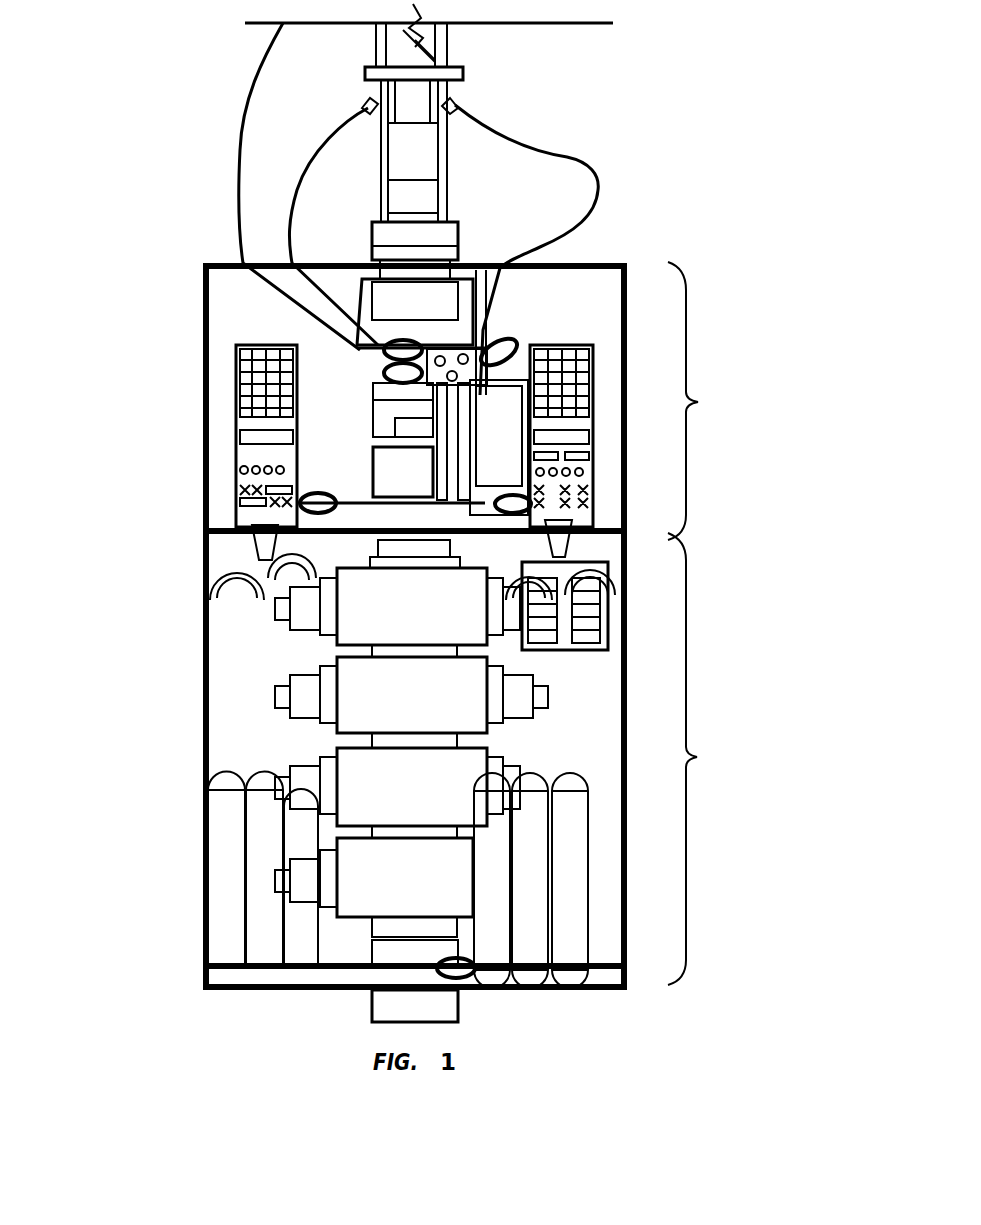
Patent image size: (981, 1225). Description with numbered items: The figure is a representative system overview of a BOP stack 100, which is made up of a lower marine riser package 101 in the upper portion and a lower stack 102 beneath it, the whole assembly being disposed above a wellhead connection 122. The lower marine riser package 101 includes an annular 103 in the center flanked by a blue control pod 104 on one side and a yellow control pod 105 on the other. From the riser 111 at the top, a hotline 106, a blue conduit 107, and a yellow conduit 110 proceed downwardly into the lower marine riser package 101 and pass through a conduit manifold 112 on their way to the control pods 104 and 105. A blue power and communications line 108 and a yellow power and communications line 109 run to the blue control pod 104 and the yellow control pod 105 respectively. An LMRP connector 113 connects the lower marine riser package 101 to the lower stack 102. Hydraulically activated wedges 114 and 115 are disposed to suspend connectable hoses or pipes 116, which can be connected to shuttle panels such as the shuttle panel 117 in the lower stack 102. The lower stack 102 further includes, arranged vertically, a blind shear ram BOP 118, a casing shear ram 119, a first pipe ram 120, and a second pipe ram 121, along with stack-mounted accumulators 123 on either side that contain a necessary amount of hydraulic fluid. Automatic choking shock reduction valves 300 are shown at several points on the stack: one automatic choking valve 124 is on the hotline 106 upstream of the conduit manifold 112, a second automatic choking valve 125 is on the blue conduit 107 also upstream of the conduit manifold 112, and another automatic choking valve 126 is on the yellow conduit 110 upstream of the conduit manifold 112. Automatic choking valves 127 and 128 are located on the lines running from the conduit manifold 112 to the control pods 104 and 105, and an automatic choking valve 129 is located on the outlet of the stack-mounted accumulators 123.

The BOP stack 100 is at (715, 144).
The lower marine riser package 101 is at (720, 401).
The lower stack 102 is at (716, 759).
The annular 103 is at (431, 317).
The blue control pod 104 is at (253, 342).
The yellow control pod 105 is at (590, 320).
The hotline 106 is at (234, 203).
The blue conduit 107 is at (330, 143).
The blue power and communications line 108 is at (382, 207).
The yellow power and communications line 109 is at (448, 187).
The yellow conduit 110 is at (568, 152).
The riser 111 is at (447, 52).
The conduit manifold 112 is at (488, 395).
The LMRP connector 113 is at (385, 473).
The hydraulically activated wedge 114 is at (268, 548).
The hydraulically activated wedge 115 is at (545, 535).
The connectable hoses or pipes 116 is at (588, 562).
The shuttle panel 117 is at (565, 648).
The blind shear ram BOP 118 is at (431, 619).
The casing shear ram 119 is at (431, 704).
The first pipe ram 120 is at (431, 791).
The second pipe ram 121 is at (431, 894).
The wellhead connection 122 is at (370, 1007).
The stack-mounted accumulators 123 is at (565, 978).
The automatic choking valve 124 is at (387, 342).
The automatic choking valve 125 is at (379, 387).
The automatic choking valve 126 is at (501, 341).
The automatic choking valve 127 is at (337, 496).
The automatic choking valve 128 is at (505, 492).
The automatic choking valve 129 is at (437, 977).
The automatic choking shock reduction valves 300 is at (432, 960).